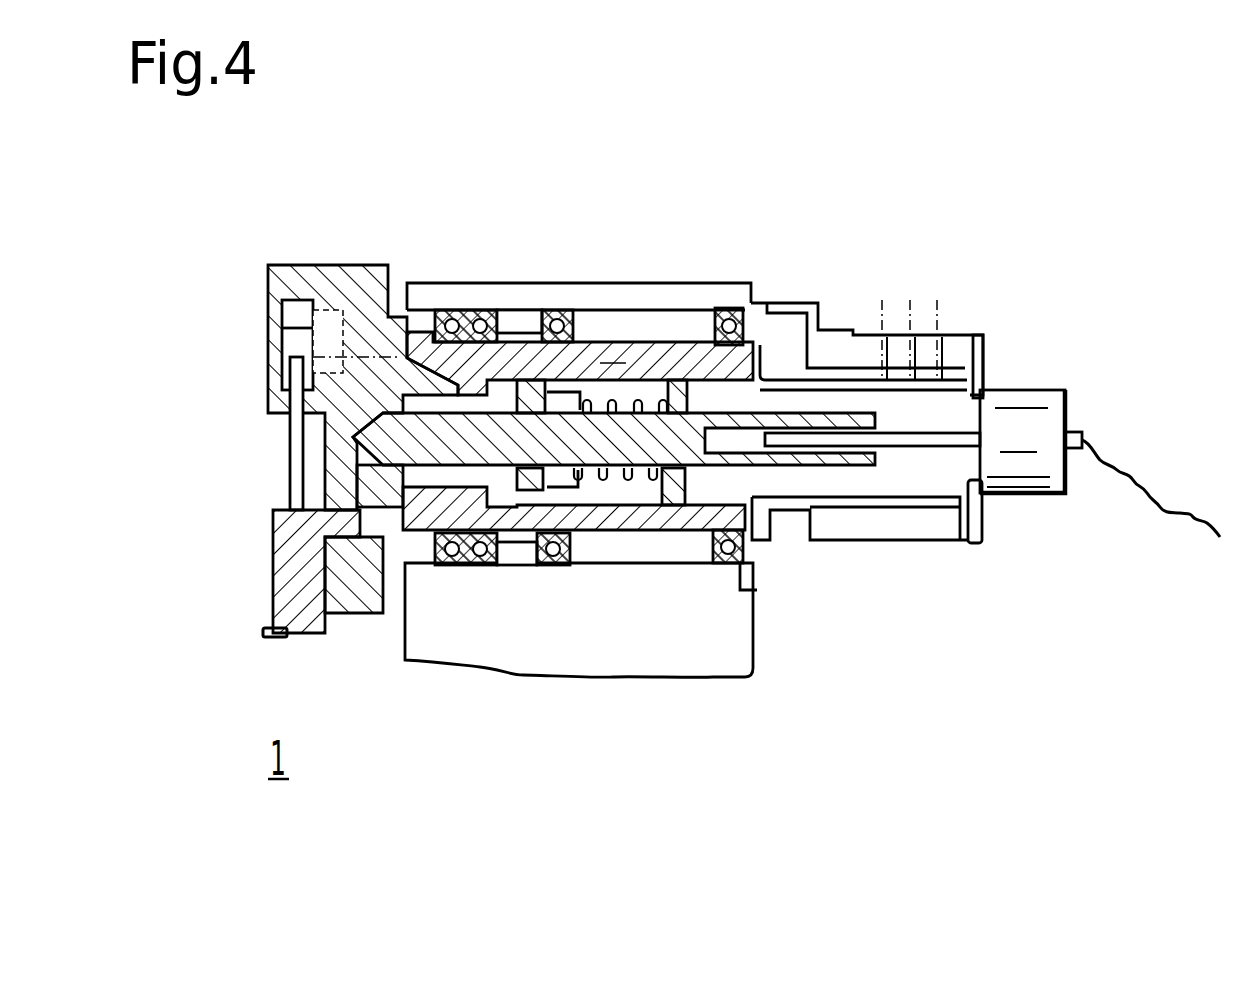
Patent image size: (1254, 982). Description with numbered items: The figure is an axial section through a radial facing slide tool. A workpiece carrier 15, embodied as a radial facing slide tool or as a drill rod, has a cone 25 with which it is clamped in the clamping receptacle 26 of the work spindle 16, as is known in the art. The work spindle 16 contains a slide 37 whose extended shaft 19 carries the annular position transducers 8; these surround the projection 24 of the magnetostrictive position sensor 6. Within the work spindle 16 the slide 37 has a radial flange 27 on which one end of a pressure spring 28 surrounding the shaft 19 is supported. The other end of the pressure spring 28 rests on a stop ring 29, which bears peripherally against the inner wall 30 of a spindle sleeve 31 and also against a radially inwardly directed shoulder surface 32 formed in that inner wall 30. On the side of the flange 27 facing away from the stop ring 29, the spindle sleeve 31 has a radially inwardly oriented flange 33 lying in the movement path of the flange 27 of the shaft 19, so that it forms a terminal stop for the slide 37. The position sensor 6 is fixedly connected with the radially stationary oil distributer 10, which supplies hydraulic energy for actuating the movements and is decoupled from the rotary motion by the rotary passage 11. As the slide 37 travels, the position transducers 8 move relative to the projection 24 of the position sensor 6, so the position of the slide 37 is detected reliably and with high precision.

The magnetostrictive position sensor 6 is at (1053, 403).
The position transducer 8 is at (867, 462).
The oil distributer 10 is at (845, 353).
The rotary passage 11 is at (948, 380).
The workpiece carrier 15 is at (297, 255).
The work spindle 16 is at (524, 260).
The shaft 19 is at (733, 460).
The projection 24 is at (928, 442).
The cone 25 is at (450, 495).
The clamping receptacle 26 is at (410, 405).
The radial flange 27 is at (568, 480).
The pressure spring 28 is at (585, 392).
The stop ring 29 is at (673, 483).
The inner wall 30 is at (752, 360).
The spindle sleeve 31 is at (613, 363).
The shoulder surface 32 is at (660, 383).
The flange 33 is at (533, 410).
The slide 37 is at (483, 445).